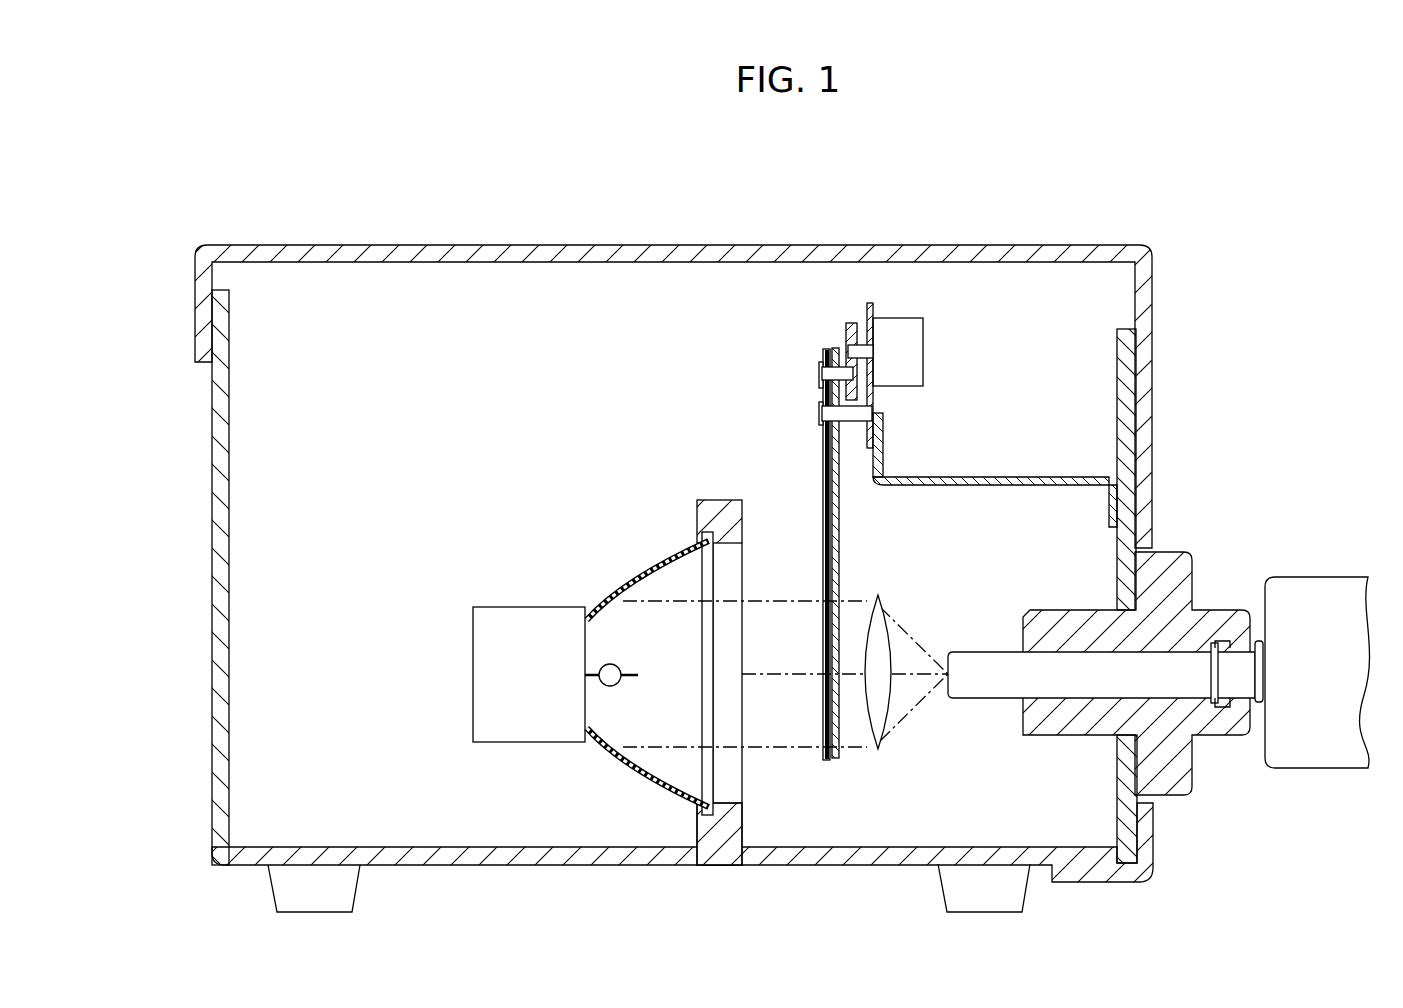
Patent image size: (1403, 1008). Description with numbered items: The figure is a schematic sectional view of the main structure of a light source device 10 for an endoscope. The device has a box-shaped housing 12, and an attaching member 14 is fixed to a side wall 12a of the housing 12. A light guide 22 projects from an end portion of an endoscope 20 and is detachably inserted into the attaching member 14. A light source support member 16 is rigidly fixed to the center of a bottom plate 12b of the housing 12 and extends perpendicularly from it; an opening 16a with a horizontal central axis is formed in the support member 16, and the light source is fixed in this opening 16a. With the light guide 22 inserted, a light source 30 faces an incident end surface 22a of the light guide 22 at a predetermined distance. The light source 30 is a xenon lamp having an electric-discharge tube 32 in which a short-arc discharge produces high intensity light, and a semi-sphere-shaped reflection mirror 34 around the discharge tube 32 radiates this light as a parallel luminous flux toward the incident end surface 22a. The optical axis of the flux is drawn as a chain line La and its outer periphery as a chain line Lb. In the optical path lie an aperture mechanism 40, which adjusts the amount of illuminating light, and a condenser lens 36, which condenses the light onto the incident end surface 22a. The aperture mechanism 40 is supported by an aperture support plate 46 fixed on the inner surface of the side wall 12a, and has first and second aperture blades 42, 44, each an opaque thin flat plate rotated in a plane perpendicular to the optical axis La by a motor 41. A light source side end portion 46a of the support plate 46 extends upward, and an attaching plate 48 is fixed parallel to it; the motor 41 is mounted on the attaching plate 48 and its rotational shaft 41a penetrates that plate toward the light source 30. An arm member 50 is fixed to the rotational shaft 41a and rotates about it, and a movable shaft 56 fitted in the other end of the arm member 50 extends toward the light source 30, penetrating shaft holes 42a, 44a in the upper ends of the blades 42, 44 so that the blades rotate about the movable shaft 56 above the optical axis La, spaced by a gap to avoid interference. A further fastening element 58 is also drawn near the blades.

The light source device 10 is at (962, 218).
The housing 12 is at (486, 244).
The side wall 12a is at (1147, 516).
The bottom plate 12b is at (590, 865).
The attaching member 14 is at (1140, 679).
The light source support member 16 is at (716, 865).
The opening 16a is at (698, 812).
The endoscope 20 is at (1320, 772).
The light guide 22 is at (1160, 678).
The incident end surface 22a is at (941, 655).
The light source 30 is at (591, 652).
The electric-discharge tube 32 is at (612, 672).
The reflection mirror 34 is at (623, 767).
The condenser lens 36 is at (882, 616).
The aperture mechanism 40 is at (878, 514).
The motor 41 is at (904, 333).
The rotational shaft 41a is at (862, 352).
The first aperture blade 42 is at (823, 553).
The shaft hole 42a is at (823, 352).
The second aperture blade 44 is at (839, 553).
The shaft hole 44a is at (834, 350).
The aperture support plate 46 is at (995, 470).
The light source side end portion 46a is at (883, 425).
The attaching plate 48 is at (873, 312).
The arm member 50 is at (848, 327).
The movable shaft 56 is at (820, 372).
The bolt 58 is at (820, 408).
The optical axis La is at (918, 679).
The outer periphery of the luminous flux Lb is at (798, 749).